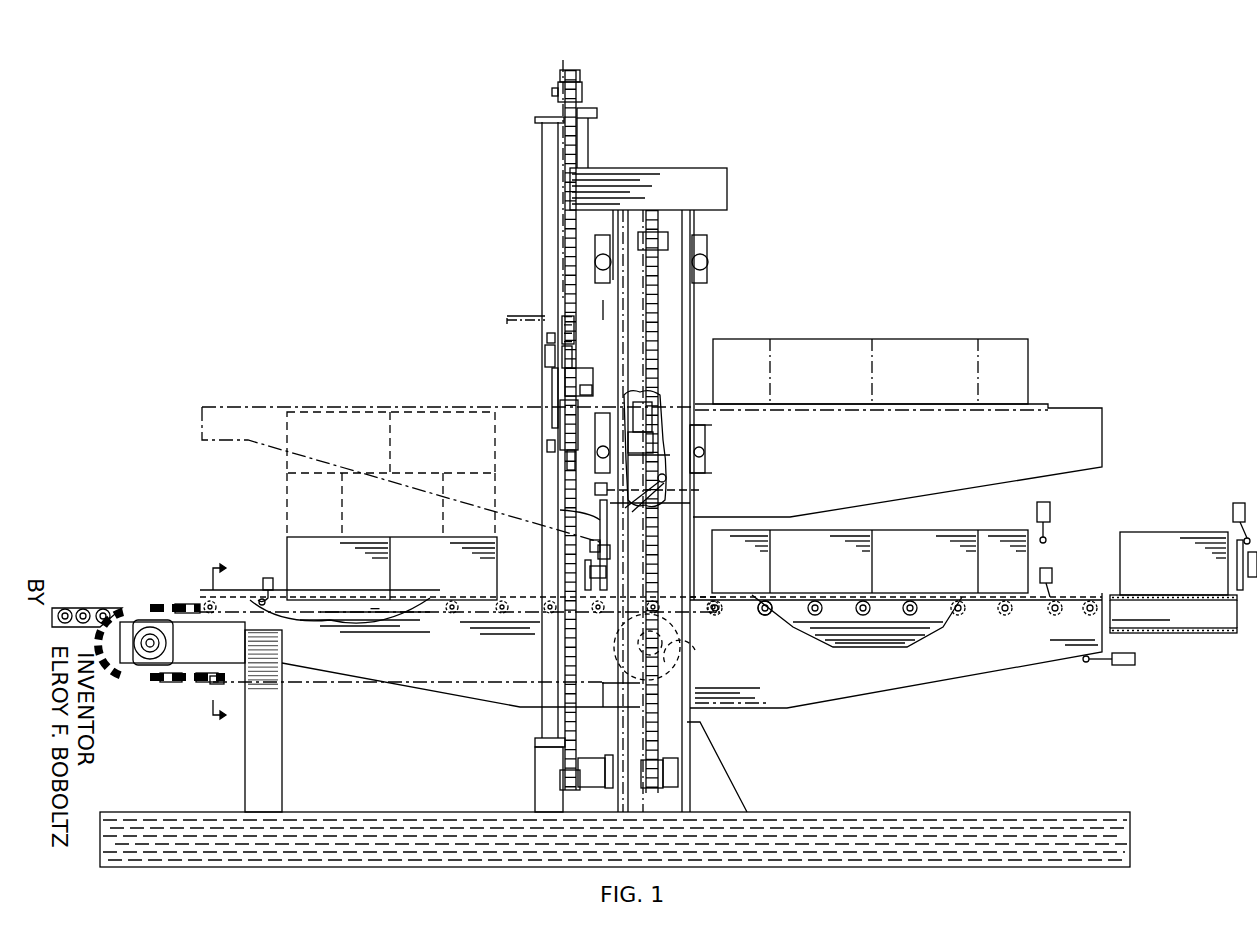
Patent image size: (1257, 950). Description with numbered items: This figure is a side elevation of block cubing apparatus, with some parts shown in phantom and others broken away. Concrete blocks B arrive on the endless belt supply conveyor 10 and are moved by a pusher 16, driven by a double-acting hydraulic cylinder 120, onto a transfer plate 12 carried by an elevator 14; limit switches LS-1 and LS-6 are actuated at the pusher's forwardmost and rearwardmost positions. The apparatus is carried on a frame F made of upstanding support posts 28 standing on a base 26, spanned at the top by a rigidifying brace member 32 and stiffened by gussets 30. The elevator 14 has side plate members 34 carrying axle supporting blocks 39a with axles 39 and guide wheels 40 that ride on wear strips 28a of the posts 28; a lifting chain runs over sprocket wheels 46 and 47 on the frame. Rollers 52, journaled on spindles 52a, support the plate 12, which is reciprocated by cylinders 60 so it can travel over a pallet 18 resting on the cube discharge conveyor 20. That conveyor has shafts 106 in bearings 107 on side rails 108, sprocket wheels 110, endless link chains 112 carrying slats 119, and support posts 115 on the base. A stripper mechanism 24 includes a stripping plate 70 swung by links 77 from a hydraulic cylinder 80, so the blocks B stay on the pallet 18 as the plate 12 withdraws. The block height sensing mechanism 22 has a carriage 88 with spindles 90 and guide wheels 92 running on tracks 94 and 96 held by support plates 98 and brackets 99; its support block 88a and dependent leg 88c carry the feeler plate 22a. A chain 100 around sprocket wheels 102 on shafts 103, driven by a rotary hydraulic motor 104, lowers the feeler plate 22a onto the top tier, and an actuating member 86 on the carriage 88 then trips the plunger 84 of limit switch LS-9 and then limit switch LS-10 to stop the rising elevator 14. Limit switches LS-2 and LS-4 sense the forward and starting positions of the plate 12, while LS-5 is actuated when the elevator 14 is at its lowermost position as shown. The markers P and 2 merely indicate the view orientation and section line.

The supply conveyor 10 is at (1203, 635).
The transfer plate 12 is at (940, 410).
The elevator 14 is at (885, 703).
The pusher 16 is at (1240, 540).
The pallet 18 is at (328, 600).
The cube discharge conveyor 20 is at (330, 668).
The block height sensing mechanism 22 is at (503, 290).
The feeler plate 22a is at (510, 318).
The stripper mechanism 24 is at (755, 466).
The base 26 is at (820, 832).
The support posts 28 is at (690, 308).
The wear strips 28a is at (612, 320).
The reinforcing gussets 30 is at (722, 782).
The rigidifying brace member 32 is at (726, 196).
The side plate members 34 is at (500, 672).
The axles 39 is at (705, 452).
The axle supporting blocks 39a is at (706, 426).
The guide wheels 40 is at (705, 473).
The sprocket wheel 46 is at (658, 794).
The sprocket wheel 47 is at (652, 216).
The rollers 52 is at (848, 602).
The spindles 52a is at (790, 604).
The cylinders 60 is at (876, 648).
The stripping plate 70 is at (560, 509).
The links 77 is at (686, 504).
The hydraulic cylinder 80 is at (650, 415).
The plunger 84 is at (590, 546).
The actuating member 86 is at (558, 420).
The carriage 88 is at (560, 394).
The support block 88a is at (575, 380).
The dependent leg 88c is at (590, 572).
The spindles 90 is at (548, 358).
The guide wheels 92 is at (546, 338).
The track 94 is at (542, 228).
The track 96 is at (548, 378).
The support plates 98 is at (536, 119).
The brackets 99 is at (583, 156).
The chain 100 is at (562, 140).
The sprocket wheels 102 is at (570, 72).
The shafts 103 is at (558, 92).
The rotary hydraulic fluid motor 104 is at (592, 790).
The shafts 106 is at (150, 650).
The bearings 107 is at (160, 678).
The side rails 108 is at (186, 677).
The sprocket wheels 110 is at (148, 606).
The endless link chains 112 is at (345, 624).
The support posts 115 is at (268, 746).
The slats 119 is at (176, 604).
The hydraulic cylinder 120 is at (1240, 600).
The limit switch LS-1 is at (1037, 512).
The limit switch LS-2 is at (268, 578).
The limit switch LS-4 is at (1046, 568).
The limit switch LS-5 is at (1126, 666).
The limit switch LS-6 is at (1234, 504).
The limit switch LS-9 is at (598, 548).
The limit switch LS-10 is at (585, 580).
The concrete blocks B is at (880, 340).
The pallet conveyor P is at (56, 600).
The frame F is at (730, 715).
The section line 2 is at (228, 643).